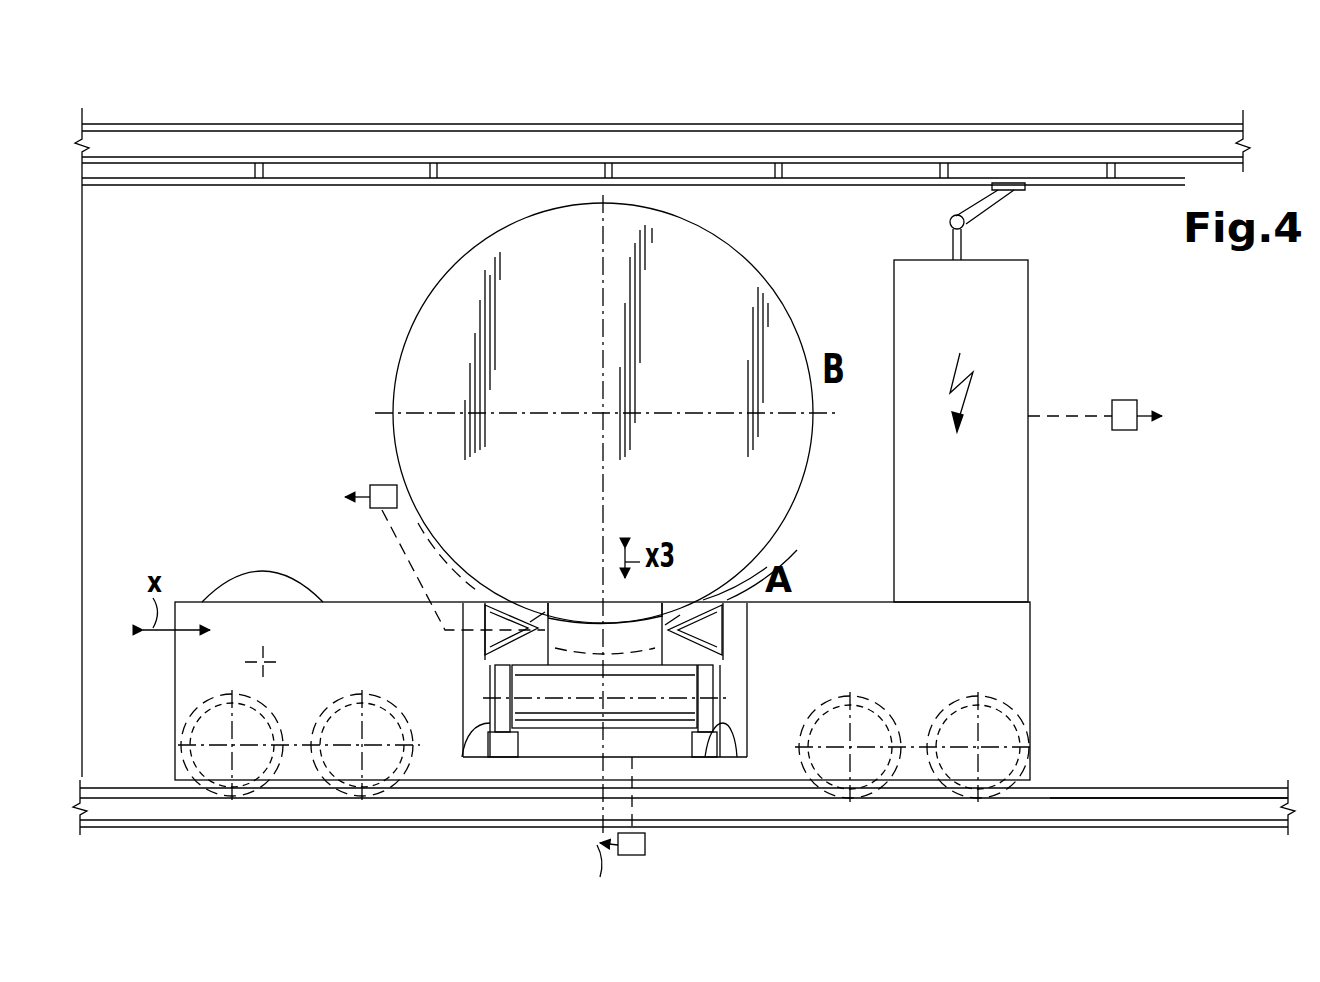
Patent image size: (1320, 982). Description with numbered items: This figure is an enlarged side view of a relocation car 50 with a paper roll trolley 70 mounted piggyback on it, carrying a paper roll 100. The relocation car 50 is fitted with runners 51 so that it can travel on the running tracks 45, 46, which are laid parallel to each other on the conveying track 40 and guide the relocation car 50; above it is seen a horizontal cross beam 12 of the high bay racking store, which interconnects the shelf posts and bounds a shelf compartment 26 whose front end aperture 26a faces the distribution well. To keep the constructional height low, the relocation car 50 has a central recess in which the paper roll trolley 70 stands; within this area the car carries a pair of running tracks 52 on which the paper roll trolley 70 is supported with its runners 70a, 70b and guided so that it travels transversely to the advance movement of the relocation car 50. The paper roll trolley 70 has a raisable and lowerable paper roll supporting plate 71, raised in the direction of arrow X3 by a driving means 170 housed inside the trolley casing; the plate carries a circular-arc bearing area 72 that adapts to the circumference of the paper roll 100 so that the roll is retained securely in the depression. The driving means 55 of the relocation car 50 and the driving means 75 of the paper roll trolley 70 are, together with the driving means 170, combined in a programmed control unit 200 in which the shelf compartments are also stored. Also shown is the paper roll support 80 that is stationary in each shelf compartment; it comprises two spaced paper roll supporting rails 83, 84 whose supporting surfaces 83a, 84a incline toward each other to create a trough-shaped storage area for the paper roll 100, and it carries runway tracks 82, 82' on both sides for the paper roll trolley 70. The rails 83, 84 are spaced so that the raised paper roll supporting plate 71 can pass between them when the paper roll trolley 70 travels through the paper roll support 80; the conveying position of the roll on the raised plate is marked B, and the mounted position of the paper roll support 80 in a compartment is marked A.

The horizontal cross beam 12 is at (900, 128).
The shelf compartment 26 is at (157, 203).
The front end aperture 26a is at (250, 325).
The paper roll 100 is at (745, 258).
The driving means of the paper roll supporting plate 170 is at (375, 485).
The programmed control unit 200 is at (752, 653).
The driving means of the relocation car 55 is at (1125, 400).
The relocation car 50 is at (1025, 625).
The runners 51 is at (185, 732).
The conveying track 40 is at (1121, 784).
The running track 45 is at (1169, 749).
The running track 46 is at (1190, 798).
The paper roll support 80 is at (503, 600).
The paper roll trolley 70 is at (676, 672).
The runner 70a is at (490, 675).
The runner 70b is at (707, 675).
The paper roll supporting rail 83 is at (532, 625).
The supporting surface 83a is at (530, 622).
The paper roll supporting rail 84 is at (707, 597).
The supporting surface 84a is at (672, 622).
The paper roll bearing area 72 is at (630, 620).
The paper roll supporting plate 71 is at (577, 647).
The running tracks 52 is at (503, 728).
The runway track 82 is at (429, 817).
The runway track 82' is at (737, 796).
The driving means of the paper roll trolley 75 is at (645, 845).